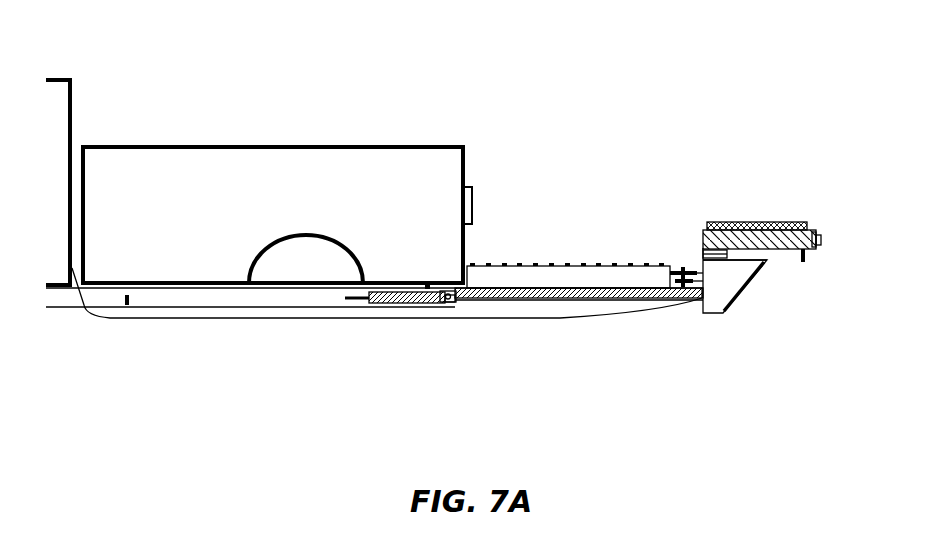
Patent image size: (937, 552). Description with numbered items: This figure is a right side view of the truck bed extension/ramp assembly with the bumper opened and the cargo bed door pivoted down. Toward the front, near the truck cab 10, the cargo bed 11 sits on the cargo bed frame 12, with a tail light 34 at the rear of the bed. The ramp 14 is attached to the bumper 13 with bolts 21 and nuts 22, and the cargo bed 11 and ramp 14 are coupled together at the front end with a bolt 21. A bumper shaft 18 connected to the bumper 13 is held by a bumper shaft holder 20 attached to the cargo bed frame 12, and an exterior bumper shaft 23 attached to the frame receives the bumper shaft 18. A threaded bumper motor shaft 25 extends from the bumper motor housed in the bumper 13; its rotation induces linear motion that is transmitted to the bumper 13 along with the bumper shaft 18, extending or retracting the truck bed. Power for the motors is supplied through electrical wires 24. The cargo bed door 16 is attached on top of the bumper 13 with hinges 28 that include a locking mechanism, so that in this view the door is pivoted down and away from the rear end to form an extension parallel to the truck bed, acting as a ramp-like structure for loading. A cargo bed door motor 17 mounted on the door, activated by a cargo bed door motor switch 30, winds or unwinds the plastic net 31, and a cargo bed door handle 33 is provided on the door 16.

The truck cab 10 is at (53, 78).
The cargo bed 11 is at (238, 141).
The cargo bed frame 12 is at (62, 308).
The bumper 13 is at (741, 296).
The ramp 14 is at (522, 265).
The cargo bed door 16 is at (777, 255).
The cargo bed door motor 17 is at (818, 243).
The bumper shaft 18 is at (523, 300).
The bumper shaft holder 20 is at (130, 298).
The bolt 21 is at (676, 270).
The nut 22 is at (676, 285).
The exterior bumper shaft 23 is at (387, 302).
The electrical wire 24 is at (288, 320).
The bumper motor shaft 25 is at (558, 300).
The hinge 28 is at (702, 248).
The cargo bed door motor switch 30 is at (808, 227).
The plastic net 31 is at (758, 222).
The cargo bed door handle 33 is at (804, 262).
The tail light 34 is at (473, 207).